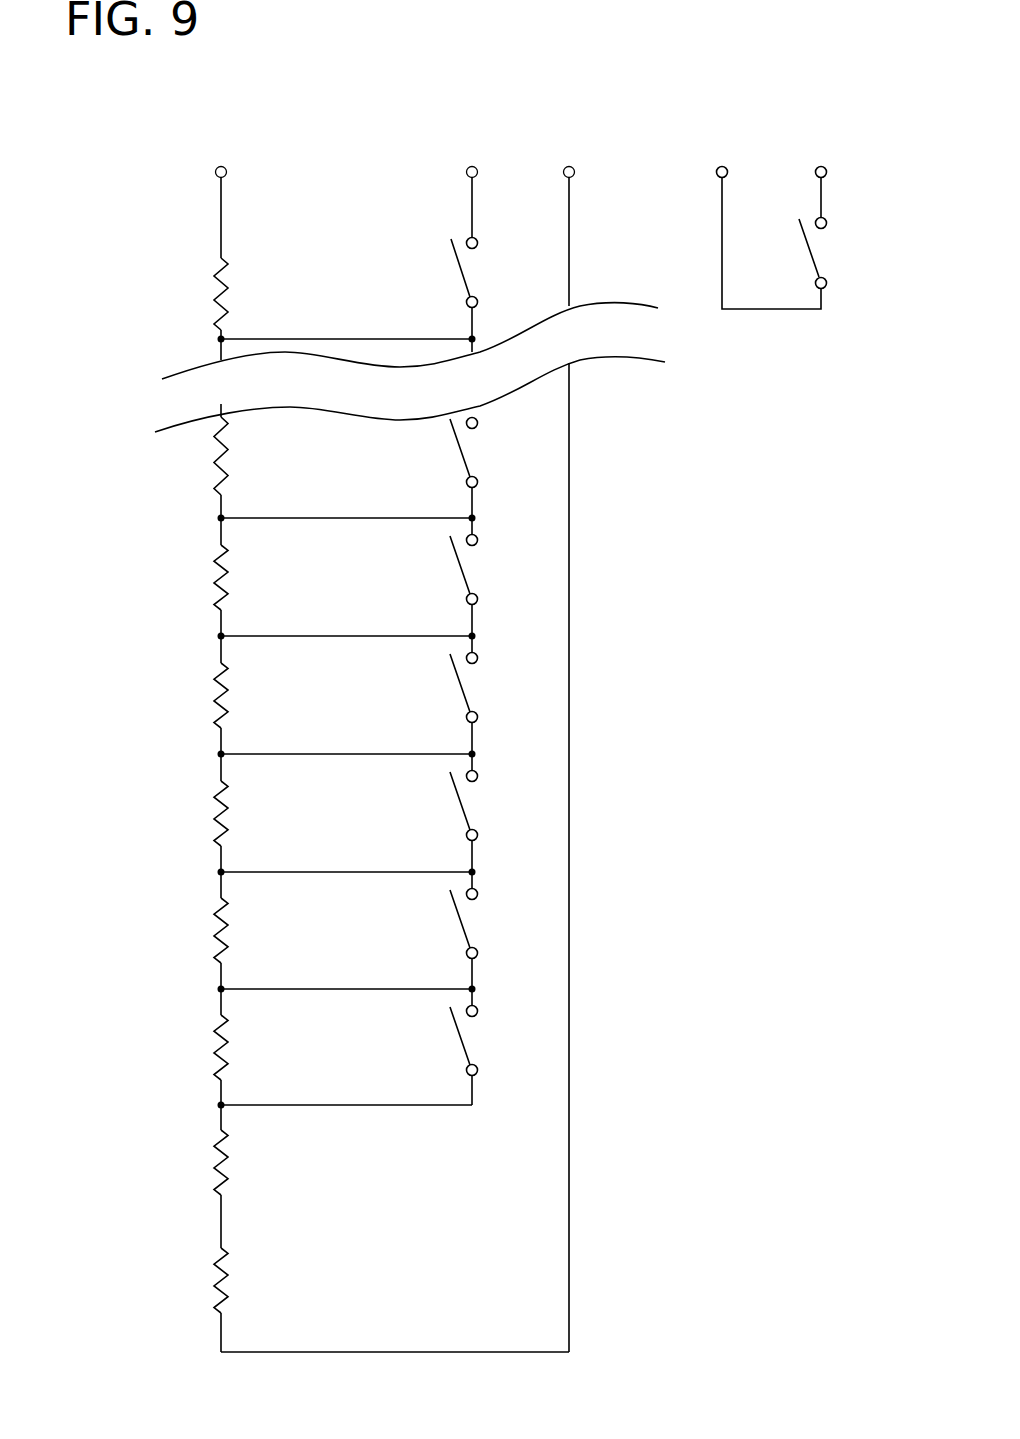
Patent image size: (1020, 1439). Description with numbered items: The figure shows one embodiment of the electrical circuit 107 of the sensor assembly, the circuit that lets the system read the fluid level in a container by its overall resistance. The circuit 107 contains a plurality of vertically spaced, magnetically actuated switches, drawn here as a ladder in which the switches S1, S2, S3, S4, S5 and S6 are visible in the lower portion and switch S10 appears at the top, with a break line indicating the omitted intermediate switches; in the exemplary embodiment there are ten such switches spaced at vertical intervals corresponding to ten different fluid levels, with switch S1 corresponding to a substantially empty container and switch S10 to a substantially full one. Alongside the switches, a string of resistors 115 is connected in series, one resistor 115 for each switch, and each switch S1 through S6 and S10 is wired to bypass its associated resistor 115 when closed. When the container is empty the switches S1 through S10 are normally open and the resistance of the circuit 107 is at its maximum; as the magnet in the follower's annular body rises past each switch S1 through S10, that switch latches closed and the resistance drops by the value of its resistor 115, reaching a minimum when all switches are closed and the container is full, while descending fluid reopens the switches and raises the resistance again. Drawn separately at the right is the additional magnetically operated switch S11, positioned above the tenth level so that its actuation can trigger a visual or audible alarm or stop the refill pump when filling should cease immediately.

The electrical circuit 107 is at (159, 191).
The resistor 115 is at (220, 461).
The magnetically actuated switch S1 is at (463, 1040).
The magnetically actuated switch S2 is at (463, 923).
The magnetically actuated switch S3 is at (463, 805).
The magnetically actuated switch S4 is at (463, 687).
The magnetically actuated switch S5 is at (463, 569).
The magnetically actuated switch S6 is at (463, 452).
The magnetically actuated switch S10 is at (463, 275).
The additional magnetically operated switch S11 is at (808, 247).